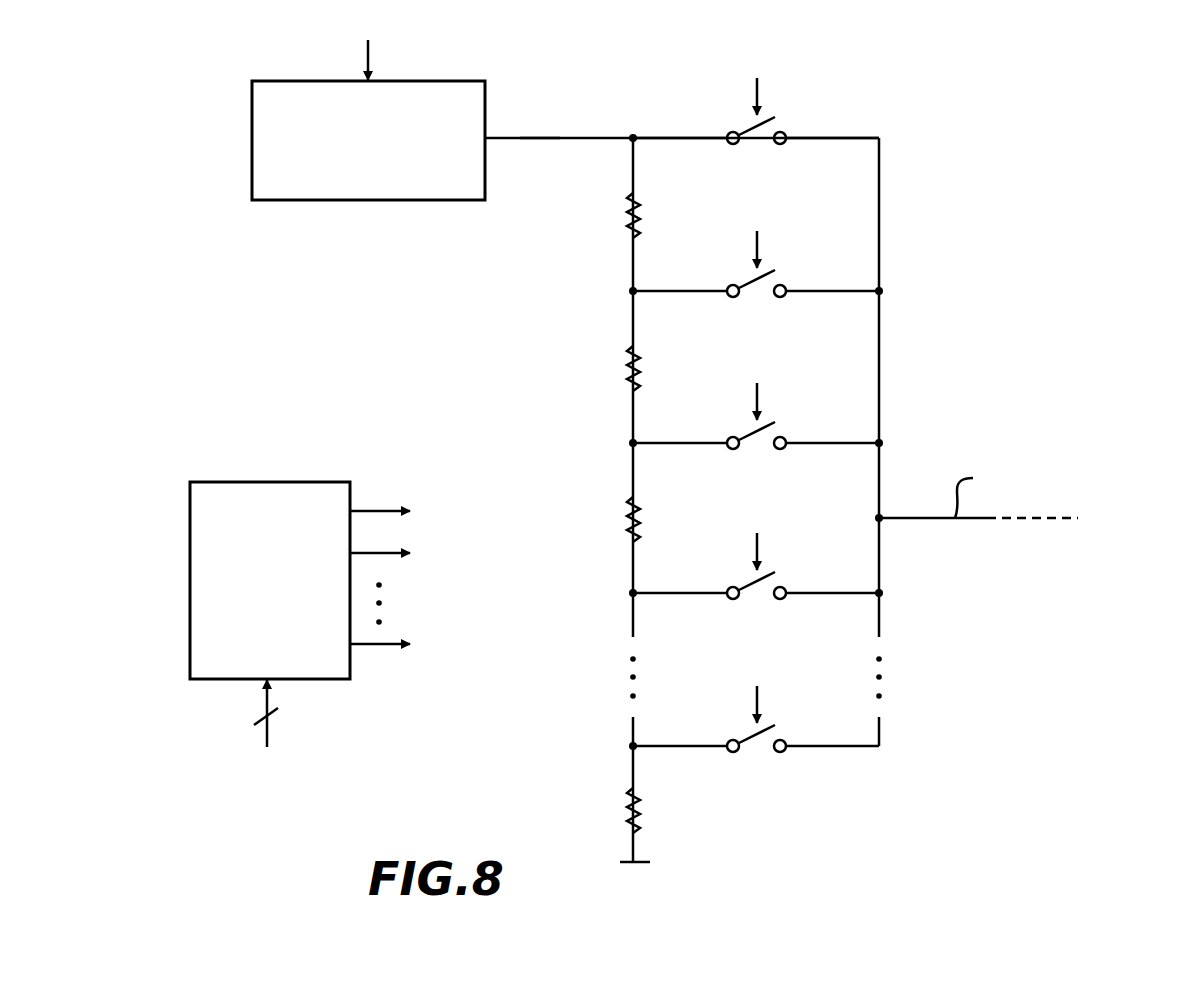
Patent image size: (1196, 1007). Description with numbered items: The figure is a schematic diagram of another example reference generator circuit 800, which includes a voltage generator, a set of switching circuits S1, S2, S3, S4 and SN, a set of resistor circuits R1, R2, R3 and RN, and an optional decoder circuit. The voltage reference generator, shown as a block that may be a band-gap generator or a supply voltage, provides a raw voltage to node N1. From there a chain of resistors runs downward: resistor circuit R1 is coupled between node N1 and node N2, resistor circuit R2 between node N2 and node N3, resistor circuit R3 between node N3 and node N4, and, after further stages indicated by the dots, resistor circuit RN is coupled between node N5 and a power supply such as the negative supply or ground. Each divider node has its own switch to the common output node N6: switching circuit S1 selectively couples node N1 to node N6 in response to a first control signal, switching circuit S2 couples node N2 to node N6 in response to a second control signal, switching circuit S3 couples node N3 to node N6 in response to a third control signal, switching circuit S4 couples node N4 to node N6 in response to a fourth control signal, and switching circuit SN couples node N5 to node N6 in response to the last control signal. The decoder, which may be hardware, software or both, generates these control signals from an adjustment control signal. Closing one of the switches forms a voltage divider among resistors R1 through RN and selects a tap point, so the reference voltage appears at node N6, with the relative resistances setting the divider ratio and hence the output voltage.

The reference generator circuit 800 is at (1082, 101).
The node N1 is at (542, 138).
The node N2 is at (633, 291).
The node N3 is at (633, 443).
The node N4 is at (633, 593).
The node N5 is at (633, 746).
The node N6 is at (879, 603).
The resistor circuit R1 is at (649, 215).
The resistor circuit R2 is at (649, 368).
The resistor circuit R3 is at (649, 519).
The resistor circuit RN is at (650, 810).
The switching circuit S1 is at (756, 146).
The switching circuit S2 is at (756, 299).
The switching circuit S3 is at (756, 451).
The switching circuit S4 is at (756, 601).
The switching circuit SN is at (756, 754).